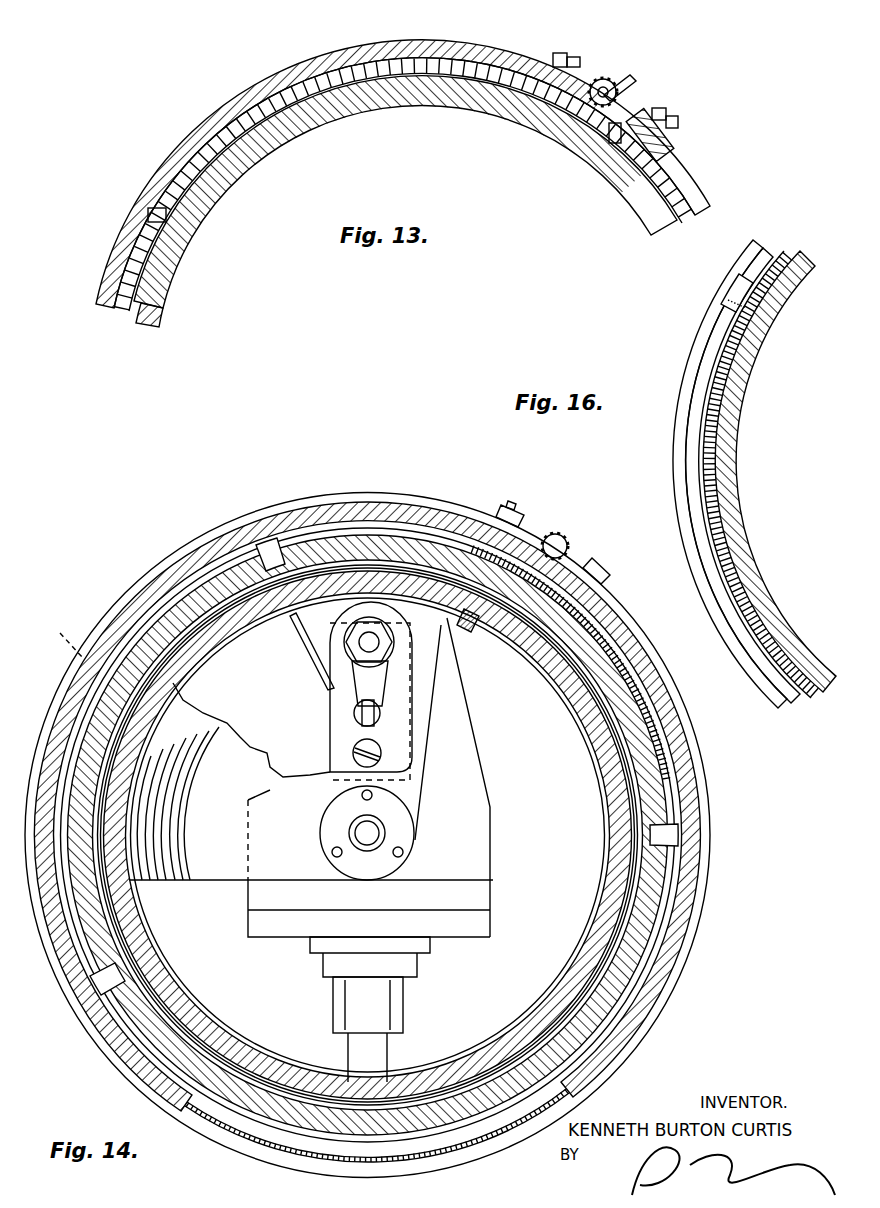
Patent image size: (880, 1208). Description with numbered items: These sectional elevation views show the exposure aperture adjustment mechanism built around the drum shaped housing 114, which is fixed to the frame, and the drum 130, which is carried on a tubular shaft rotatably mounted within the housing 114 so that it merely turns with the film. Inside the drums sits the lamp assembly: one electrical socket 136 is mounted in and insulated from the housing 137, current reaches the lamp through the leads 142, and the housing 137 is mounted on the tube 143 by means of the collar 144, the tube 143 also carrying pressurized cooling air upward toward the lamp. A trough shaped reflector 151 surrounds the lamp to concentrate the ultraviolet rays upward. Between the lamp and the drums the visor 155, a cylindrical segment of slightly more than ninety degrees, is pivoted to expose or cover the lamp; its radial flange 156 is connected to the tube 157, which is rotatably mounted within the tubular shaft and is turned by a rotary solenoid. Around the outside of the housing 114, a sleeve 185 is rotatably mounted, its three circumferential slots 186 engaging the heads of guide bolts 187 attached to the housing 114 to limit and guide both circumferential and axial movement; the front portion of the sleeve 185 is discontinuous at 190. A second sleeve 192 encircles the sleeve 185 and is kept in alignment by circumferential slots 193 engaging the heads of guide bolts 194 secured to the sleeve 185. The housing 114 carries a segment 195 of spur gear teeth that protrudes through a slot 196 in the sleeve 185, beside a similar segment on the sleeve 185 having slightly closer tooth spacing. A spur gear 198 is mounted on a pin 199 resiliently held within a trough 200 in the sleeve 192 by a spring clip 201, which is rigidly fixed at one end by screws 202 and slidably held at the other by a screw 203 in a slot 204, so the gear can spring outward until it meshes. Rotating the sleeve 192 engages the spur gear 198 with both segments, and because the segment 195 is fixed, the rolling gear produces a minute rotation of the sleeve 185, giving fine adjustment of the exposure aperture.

In FIG. 13, the drum shaped housing 114 is at (327, 113).
In FIG. 16, the drum shaped housing 114 is at (748, 393).
In FIG. 14, the drum shaped housing 114 is at (692, 812).
In FIG. 14, the drum 130 is at (488, 698).
In FIG. 14, the electrical socket 136 is at (350, 641).
In FIG. 14, the housing 137 is at (340, 700).
In FIG. 14, the leads 142 is at (358, 726).
In FIG. 14, the tube 143 is at (366, 1070).
In FIG. 14, the collar 144 is at (335, 1006).
In FIG. 14, the trough shaped reflector 151 is at (470, 632).
In FIG. 14, the visor 155 is at (163, 853).
In FIG. 14, the radial flange 156 is at (428, 776).
In FIG. 14, the tube 157 is at (350, 832).
In FIG. 13, the sleeve 185 is at (182, 257).
In FIG. 16, the sleeve 185 is at (740, 337).
In FIG. 14, the sleeve 185 is at (668, 755).
In FIG. 14, the circumferential slots 186 is at (346, 525).
In FIG. 14, the guide bolts 187 is at (258, 538).
In FIG. 14, the discontinuity 190 is at (356, 1140).
In FIG. 13, the second sleeve 192 is at (300, 72).
In FIG. 16, the second sleeve 192 is at (727, 283).
In FIG. 14, the second sleeve 192 is at (148, 590).
In FIG. 16, the circumferential slots 193 is at (702, 378).
In FIG. 16, the guide bolts 194 is at (730, 300).
In FIG. 14, the guide bolts 194 is at (57, 634).
In FIG. 13, the segment of spur gear teeth 195 is at (213, 133).
In FIG. 13, the slot 196 is at (172, 222).
In FIG. 13, the spur gear 198 is at (608, 80).
In FIG. 14, the spur gear 198 is at (553, 534).
In FIG. 13, the pin 199 is at (622, 88).
In FIG. 13, the trough 200 is at (660, 130).
In FIG. 13, the spring clip 201 is at (676, 120).
In FIG. 14, the spring clip 201 is at (500, 510).
In FIG. 13, the screws 202 is at (657, 108).
In FIG. 14, the screws 202 is at (597, 560).
In FIG. 13, the screw 203 is at (560, 53).
In FIG. 14, the screw 203 is at (510, 501).
In FIG. 13, the slot 204 is at (575, 57).